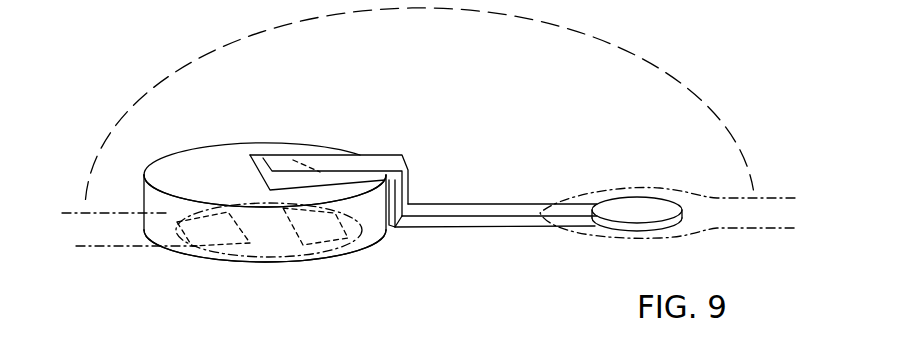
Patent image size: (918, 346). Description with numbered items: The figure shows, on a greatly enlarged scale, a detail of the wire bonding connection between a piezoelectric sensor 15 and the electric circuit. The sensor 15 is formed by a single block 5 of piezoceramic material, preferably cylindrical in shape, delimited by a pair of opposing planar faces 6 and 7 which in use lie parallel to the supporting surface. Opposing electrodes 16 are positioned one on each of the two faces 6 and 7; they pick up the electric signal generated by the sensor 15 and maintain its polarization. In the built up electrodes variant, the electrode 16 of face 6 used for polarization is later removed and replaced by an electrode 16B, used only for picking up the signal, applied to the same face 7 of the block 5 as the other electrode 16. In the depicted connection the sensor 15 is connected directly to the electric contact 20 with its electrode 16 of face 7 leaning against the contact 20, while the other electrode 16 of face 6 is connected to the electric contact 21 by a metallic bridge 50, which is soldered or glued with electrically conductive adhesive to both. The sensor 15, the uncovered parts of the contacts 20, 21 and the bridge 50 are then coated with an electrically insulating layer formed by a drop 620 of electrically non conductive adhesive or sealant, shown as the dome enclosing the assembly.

The drop of electrically non conductive adhesive or sealant 620 is at (716, 111).
The sensor 15 is at (196, 144).
The face 6 is at (225, 160).
The face 7 is at (291, 272).
The electric contact 20 is at (254, 257).
The electrode 16 is at (260, 157).
The electrode 16B is at (332, 245).
The block 5 is at (372, 233).
The metallic bridge 50 is at (476, 210).
The electric contact 21 is at (675, 187).